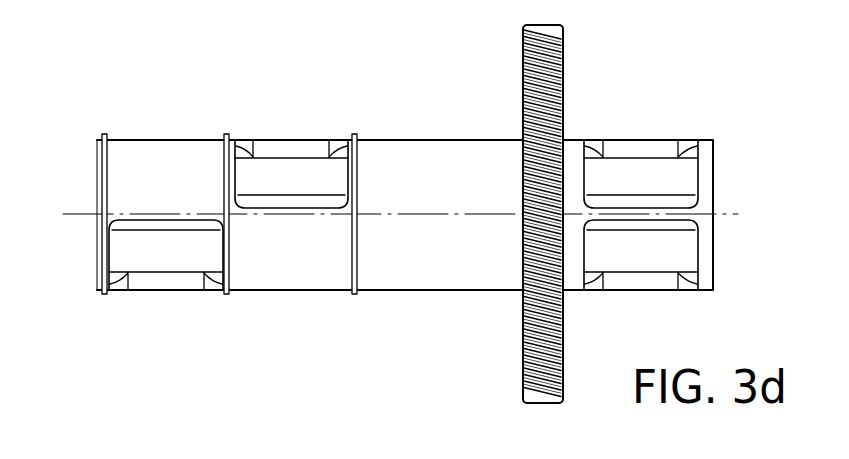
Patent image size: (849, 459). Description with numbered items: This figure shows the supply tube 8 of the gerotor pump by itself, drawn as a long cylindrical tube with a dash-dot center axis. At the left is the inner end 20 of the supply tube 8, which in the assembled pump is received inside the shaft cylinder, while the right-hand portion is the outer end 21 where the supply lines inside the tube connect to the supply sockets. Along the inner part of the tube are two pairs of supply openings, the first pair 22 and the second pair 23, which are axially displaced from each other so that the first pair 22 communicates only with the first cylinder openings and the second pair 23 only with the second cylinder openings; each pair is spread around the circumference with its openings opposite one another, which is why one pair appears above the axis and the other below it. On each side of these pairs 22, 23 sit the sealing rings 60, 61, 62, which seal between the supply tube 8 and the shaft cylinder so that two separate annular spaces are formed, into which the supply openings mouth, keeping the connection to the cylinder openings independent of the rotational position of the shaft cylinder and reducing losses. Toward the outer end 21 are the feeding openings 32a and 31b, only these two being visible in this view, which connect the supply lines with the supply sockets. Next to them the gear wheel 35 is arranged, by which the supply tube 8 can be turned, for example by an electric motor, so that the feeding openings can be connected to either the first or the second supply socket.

The supply tube 8 is at (437, 165).
The inner end 20 is at (249, 316).
The outer end 21 is at (738, 173).
The pair of first supply openings 22 is at (290, 148).
The pair of second supply openings 23 is at (155, 292).
The feeding opening 31b is at (647, 247).
The feeding opening 32a is at (642, 150).
The gear wheel 35 is at (523, 329).
The sealing ring 60 is at (102, 294).
The sealing ring 61 is at (227, 294).
The sealing ring 62 is at (350, 295).